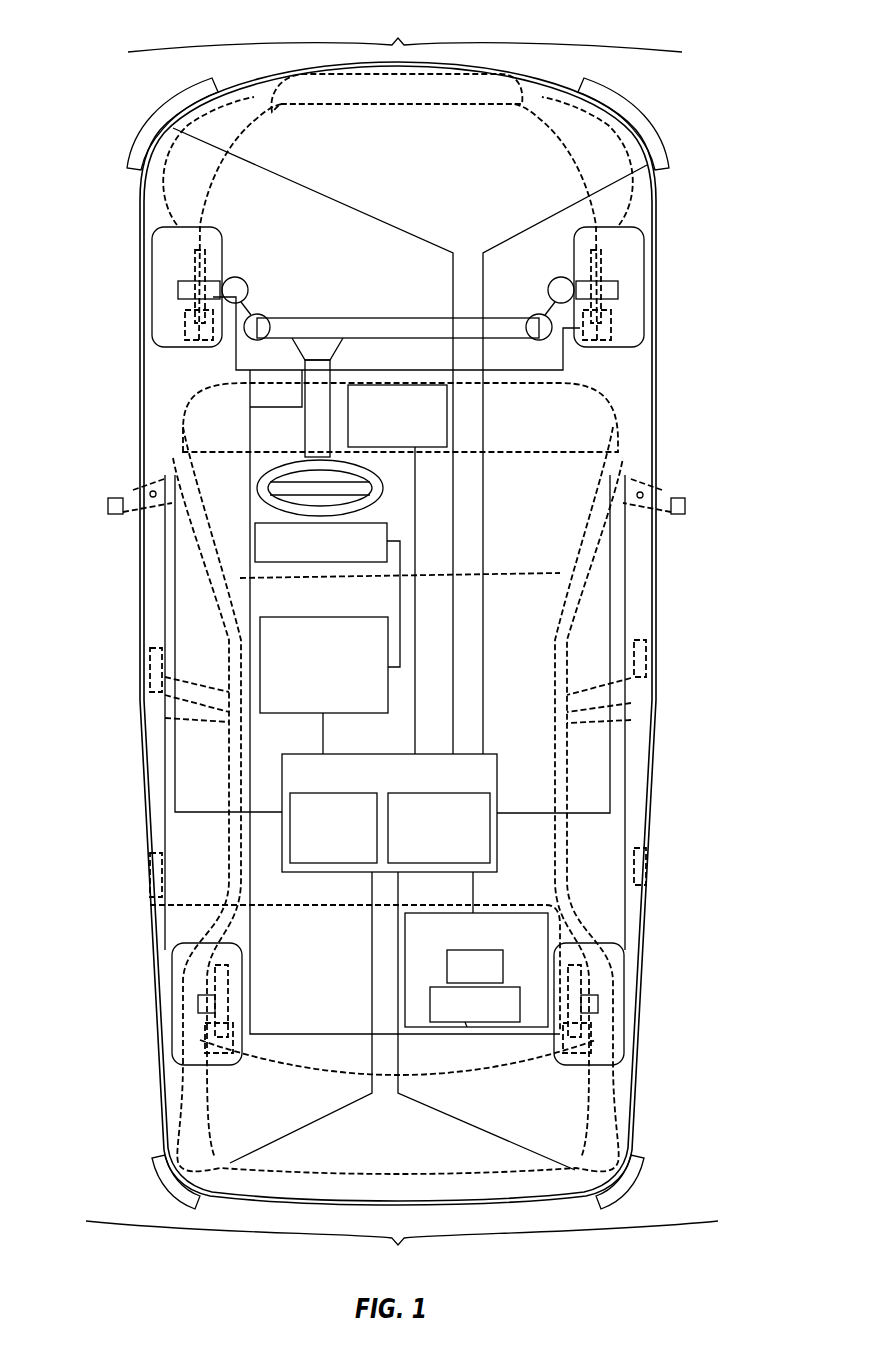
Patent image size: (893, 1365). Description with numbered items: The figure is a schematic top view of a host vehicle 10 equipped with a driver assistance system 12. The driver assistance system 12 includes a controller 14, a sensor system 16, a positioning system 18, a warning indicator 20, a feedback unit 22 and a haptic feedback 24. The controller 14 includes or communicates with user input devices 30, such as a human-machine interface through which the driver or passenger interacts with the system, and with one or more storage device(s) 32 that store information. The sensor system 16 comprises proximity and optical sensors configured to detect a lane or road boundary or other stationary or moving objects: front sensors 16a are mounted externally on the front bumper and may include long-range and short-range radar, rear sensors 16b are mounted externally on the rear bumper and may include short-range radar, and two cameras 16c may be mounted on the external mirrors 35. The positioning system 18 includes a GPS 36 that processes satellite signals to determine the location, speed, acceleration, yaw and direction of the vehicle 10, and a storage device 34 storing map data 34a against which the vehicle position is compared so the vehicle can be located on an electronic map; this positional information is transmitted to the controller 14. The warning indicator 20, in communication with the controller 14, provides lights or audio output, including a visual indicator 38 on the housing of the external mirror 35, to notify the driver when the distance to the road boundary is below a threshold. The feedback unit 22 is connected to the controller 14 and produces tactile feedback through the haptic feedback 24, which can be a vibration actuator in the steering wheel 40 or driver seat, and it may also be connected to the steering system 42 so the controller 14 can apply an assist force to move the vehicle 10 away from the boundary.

The host vehicle 10 is at (689, 306).
The driver assistance system 12 is at (535, 489).
The controller 14 is at (497, 840).
The sensor system 16 is at (402, 641).
The front sensors 16a is at (178, 104).
The rear sensors 16b is at (170, 1178).
The cameras 16c is at (108, 510).
The positioning system 18 is at (548, 933).
The warning indicator 20 is at (447, 425).
The feedback unit 22 is at (260, 698).
The haptic feedback 24 is at (255, 542).
The user input devices 30 is at (460, 793).
The storage device(s) 32 is at (317, 793).
The storage device 34 is at (490, 1023).
The map data 34a is at (467, 1025).
The external mirror 35 is at (130, 498).
The GPS 36 is at (447, 968).
The visual indicator 38 is at (153, 490).
The steering wheel 40 is at (270, 465).
The steering system 42 is at (334, 416).